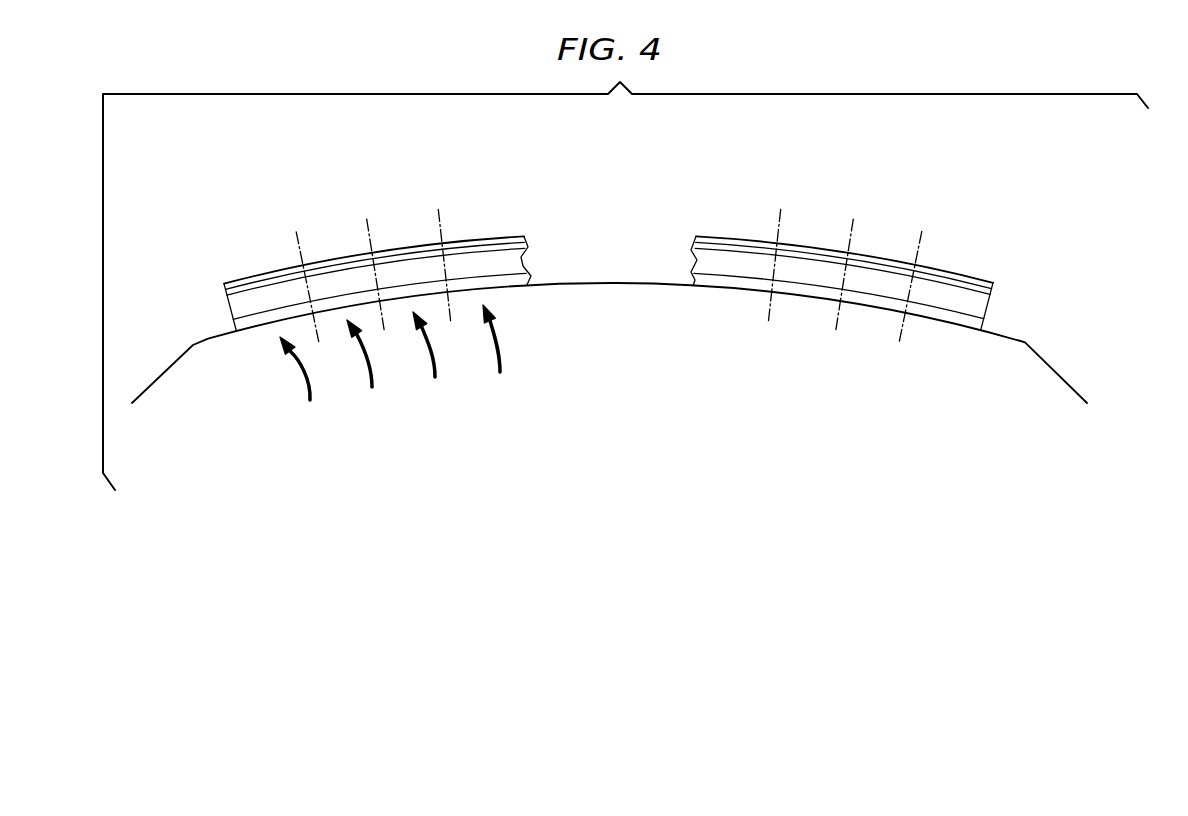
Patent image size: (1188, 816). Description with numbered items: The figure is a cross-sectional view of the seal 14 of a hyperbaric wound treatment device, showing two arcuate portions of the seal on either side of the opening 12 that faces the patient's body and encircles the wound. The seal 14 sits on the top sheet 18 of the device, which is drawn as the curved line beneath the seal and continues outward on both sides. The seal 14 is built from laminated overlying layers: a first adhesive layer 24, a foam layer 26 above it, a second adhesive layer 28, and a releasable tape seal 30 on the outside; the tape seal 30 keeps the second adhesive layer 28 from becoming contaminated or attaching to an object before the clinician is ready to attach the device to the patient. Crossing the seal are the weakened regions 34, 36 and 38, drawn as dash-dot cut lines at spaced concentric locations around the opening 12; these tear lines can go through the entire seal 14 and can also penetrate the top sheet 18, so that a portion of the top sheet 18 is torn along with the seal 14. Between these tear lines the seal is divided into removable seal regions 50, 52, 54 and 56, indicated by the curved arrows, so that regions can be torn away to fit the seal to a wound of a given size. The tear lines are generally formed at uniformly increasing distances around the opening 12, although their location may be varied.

The opening 12 is at (593, 240).
The seal 14 is at (849, 273).
The top sheet 18 is at (208, 338).
The first adhesive layer 24 is at (960, 320).
The foam layer 26 is at (983, 305).
The second adhesive layer 28 is at (990, 290).
The releasable tape seal 30 is at (967, 278).
The weakened region 34 is at (780, 224).
The weakened region 36 is at (857, 233).
The weakened region 38 is at (929, 248).
The removable seal region 50 is at (496, 353).
The removable seal region 52 is at (429, 358).
The removable seal region 54 is at (365, 367).
The removable seal region 56 is at (300, 382).